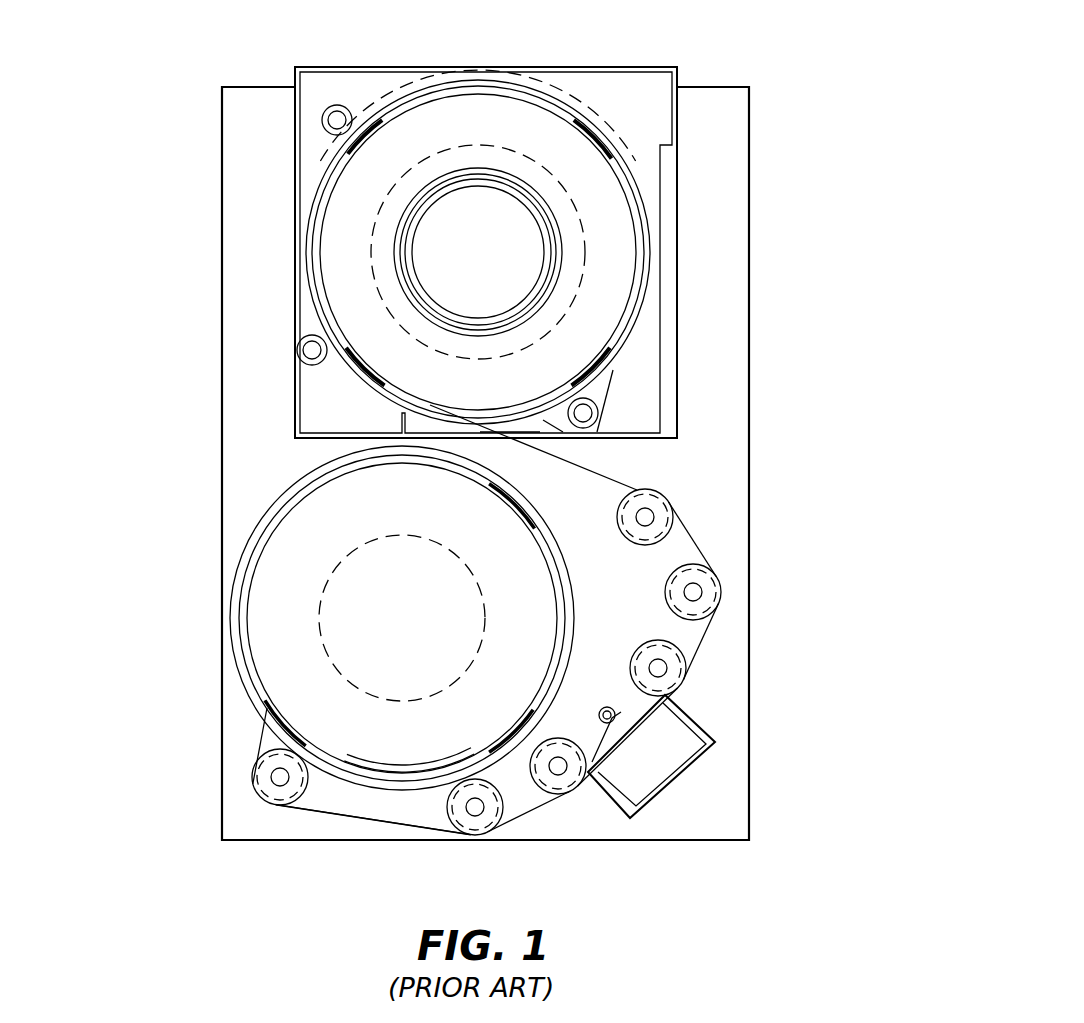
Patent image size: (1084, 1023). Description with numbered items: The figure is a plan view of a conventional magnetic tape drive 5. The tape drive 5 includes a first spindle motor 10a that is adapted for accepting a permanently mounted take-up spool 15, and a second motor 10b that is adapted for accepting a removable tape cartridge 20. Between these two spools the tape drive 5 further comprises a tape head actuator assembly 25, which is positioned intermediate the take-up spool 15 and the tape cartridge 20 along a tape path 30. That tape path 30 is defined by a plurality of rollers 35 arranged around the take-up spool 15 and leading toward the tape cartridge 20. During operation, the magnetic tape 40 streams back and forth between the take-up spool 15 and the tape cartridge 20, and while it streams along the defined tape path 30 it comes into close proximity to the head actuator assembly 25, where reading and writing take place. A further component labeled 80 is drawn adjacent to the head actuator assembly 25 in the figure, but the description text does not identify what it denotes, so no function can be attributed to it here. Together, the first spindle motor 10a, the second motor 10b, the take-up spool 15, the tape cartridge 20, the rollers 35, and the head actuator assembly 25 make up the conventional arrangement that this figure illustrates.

The tape drive 5 is at (150, 876).
The tape cartridge 20 is at (624, 100).
The second motor 10b is at (457, 253).
The first spindle motor 10a is at (370, 598).
The take-up spool 15 is at (277, 638).
The rollers 35 is at (250, 777).
The tape path 30 is at (703, 672).
The magnetic tape 40 is at (392, 830).
The print head assembly 80 is at (678, 755).
The tape head actuator assembly 25 is at (645, 740).